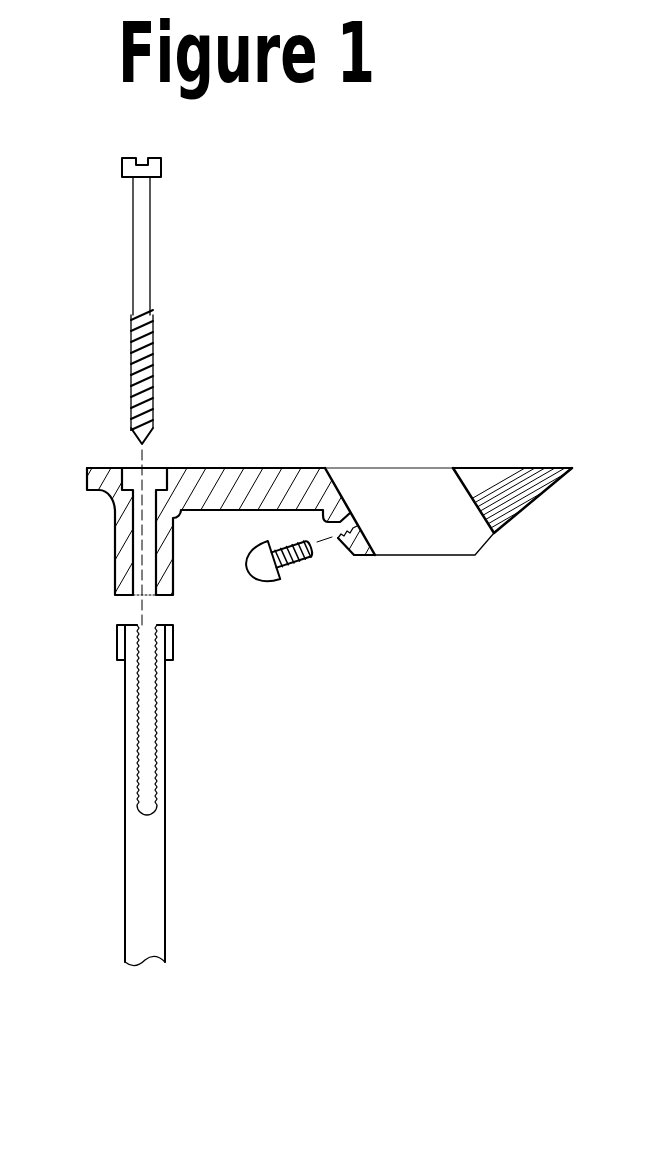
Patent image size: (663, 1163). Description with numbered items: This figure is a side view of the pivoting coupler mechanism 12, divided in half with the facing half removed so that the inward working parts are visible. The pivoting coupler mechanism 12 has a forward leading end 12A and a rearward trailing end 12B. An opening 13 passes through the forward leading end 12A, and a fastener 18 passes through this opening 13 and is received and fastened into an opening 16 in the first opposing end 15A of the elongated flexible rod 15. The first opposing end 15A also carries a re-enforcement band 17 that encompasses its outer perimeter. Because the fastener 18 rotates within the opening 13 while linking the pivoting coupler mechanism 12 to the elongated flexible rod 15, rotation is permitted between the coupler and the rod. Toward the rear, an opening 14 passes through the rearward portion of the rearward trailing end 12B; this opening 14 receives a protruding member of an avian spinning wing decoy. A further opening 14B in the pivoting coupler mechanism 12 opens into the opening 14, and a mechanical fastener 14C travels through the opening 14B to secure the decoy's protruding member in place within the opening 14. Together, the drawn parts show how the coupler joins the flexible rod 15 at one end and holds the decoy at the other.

The pivoting coupler mechanism 12 is at (254, 490).
The forward leading end 12A is at (104, 494).
The rearward trailing end 12B is at (522, 512).
The opening 13 is at (128, 477).
The opening 14 is at (413, 498).
The opening 14B is at (356, 522).
The mechanical fastener 14C is at (275, 584).
The elongated flexible rod 15 is at (137, 943).
The first opposing end 15A is at (165, 703).
The opening 16 is at (150, 626).
The re-enforcement band 17 is at (122, 643).
The fastener 18 is at (140, 247).